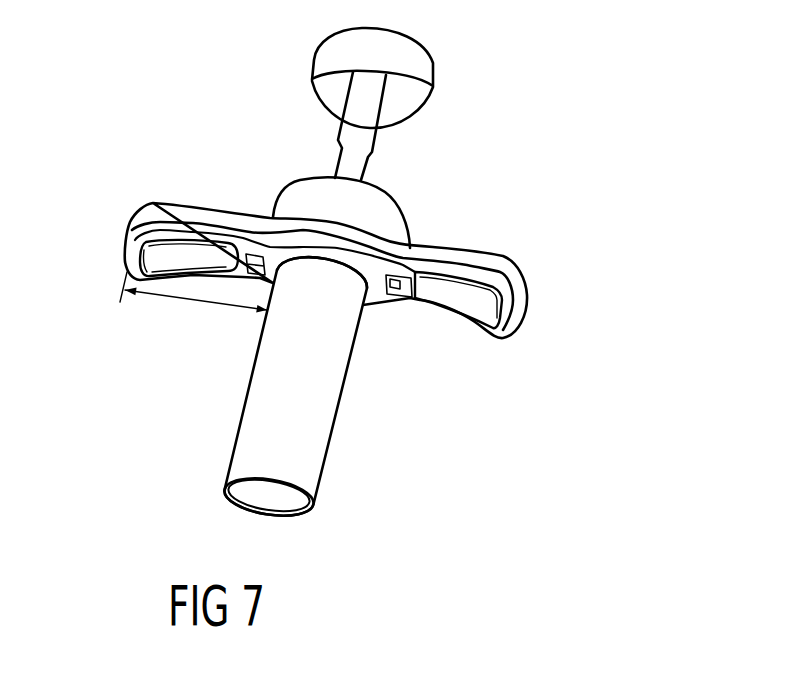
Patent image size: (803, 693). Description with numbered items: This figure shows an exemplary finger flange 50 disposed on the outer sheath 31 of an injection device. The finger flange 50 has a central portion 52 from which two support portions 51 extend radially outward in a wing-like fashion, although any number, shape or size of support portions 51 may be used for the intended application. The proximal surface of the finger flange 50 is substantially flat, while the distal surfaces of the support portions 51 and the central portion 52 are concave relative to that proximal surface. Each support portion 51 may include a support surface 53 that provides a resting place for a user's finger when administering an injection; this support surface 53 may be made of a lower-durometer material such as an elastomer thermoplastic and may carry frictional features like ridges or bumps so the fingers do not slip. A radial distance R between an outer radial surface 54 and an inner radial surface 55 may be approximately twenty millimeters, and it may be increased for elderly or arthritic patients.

The finger flange 50 is at (465, 127).
The support portion 51 is at (163, 216).
The central portion 52 is at (310, 231).
The support surface 53 is at (157, 252).
The outer radial surface 54 is at (132, 230).
The inner radial surface 55 is at (270, 312).
The outer sheath 31 is at (335, 427).